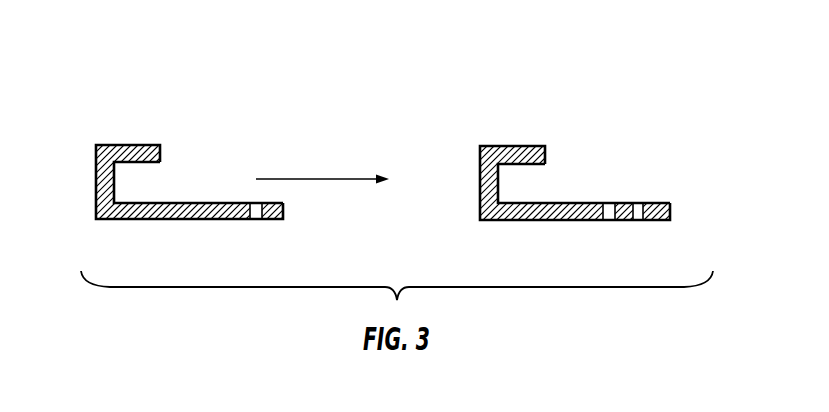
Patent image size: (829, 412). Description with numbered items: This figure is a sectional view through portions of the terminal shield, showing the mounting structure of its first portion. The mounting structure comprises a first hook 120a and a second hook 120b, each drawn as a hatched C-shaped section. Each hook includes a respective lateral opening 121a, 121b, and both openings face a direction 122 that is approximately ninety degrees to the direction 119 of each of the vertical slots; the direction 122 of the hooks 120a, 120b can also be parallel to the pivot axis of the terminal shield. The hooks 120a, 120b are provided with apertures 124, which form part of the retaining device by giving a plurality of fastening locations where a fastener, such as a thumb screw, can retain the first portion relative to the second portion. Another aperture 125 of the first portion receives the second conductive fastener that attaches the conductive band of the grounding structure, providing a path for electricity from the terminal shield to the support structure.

The direction of the vertical slots 119 is at (137, 183).
The first hook 120a is at (607, 135).
The second hook 120b is at (223, 135).
The lateral opening 121a is at (547, 190).
The lateral opening 121b is at (160, 190).
The direction 122 is at (283, 179).
The aperture 124 is at (258, 208).
The aperture 125 is at (602, 218).